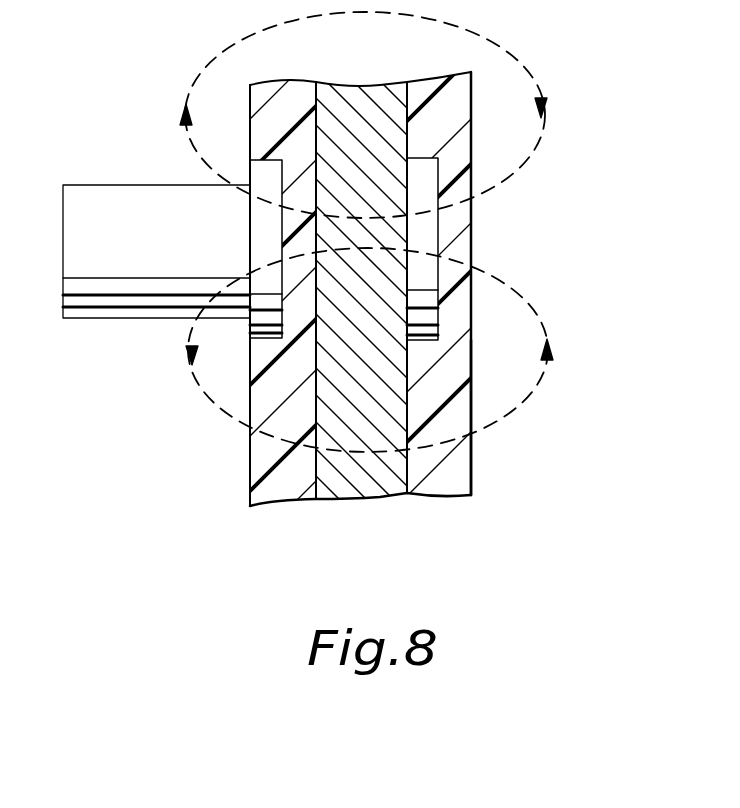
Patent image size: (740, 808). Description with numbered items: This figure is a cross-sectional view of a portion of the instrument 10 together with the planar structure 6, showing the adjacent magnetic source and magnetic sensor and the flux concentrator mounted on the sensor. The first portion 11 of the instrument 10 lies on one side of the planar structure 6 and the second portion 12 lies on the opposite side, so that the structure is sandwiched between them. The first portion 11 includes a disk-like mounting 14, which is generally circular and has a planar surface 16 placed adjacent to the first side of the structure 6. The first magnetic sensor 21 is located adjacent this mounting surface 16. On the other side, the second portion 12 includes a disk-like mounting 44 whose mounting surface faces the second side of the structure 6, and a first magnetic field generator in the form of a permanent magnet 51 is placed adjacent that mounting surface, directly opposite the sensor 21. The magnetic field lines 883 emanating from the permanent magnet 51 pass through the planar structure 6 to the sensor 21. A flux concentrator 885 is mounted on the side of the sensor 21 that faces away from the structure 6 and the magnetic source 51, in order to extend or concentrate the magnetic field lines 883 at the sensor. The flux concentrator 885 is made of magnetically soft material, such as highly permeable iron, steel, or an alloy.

The planar structure 6 is at (360, 499).
The instrument 10 is at (282, 590).
The first portion 11 is at (226, 532).
The second portion 12 is at (478, 519).
The disk-like mounting 14 is at (250, 472).
The planar surface 16 is at (250, 97).
The first magnetic sensor 21 is at (250, 173).
The disk-like mounting 44 is at (473, 470).
The permanent magnet 51 is at (438, 167).
The magnetic field lines 883 is at (523, 160).
The flux concentrator 885 is at (110, 320).